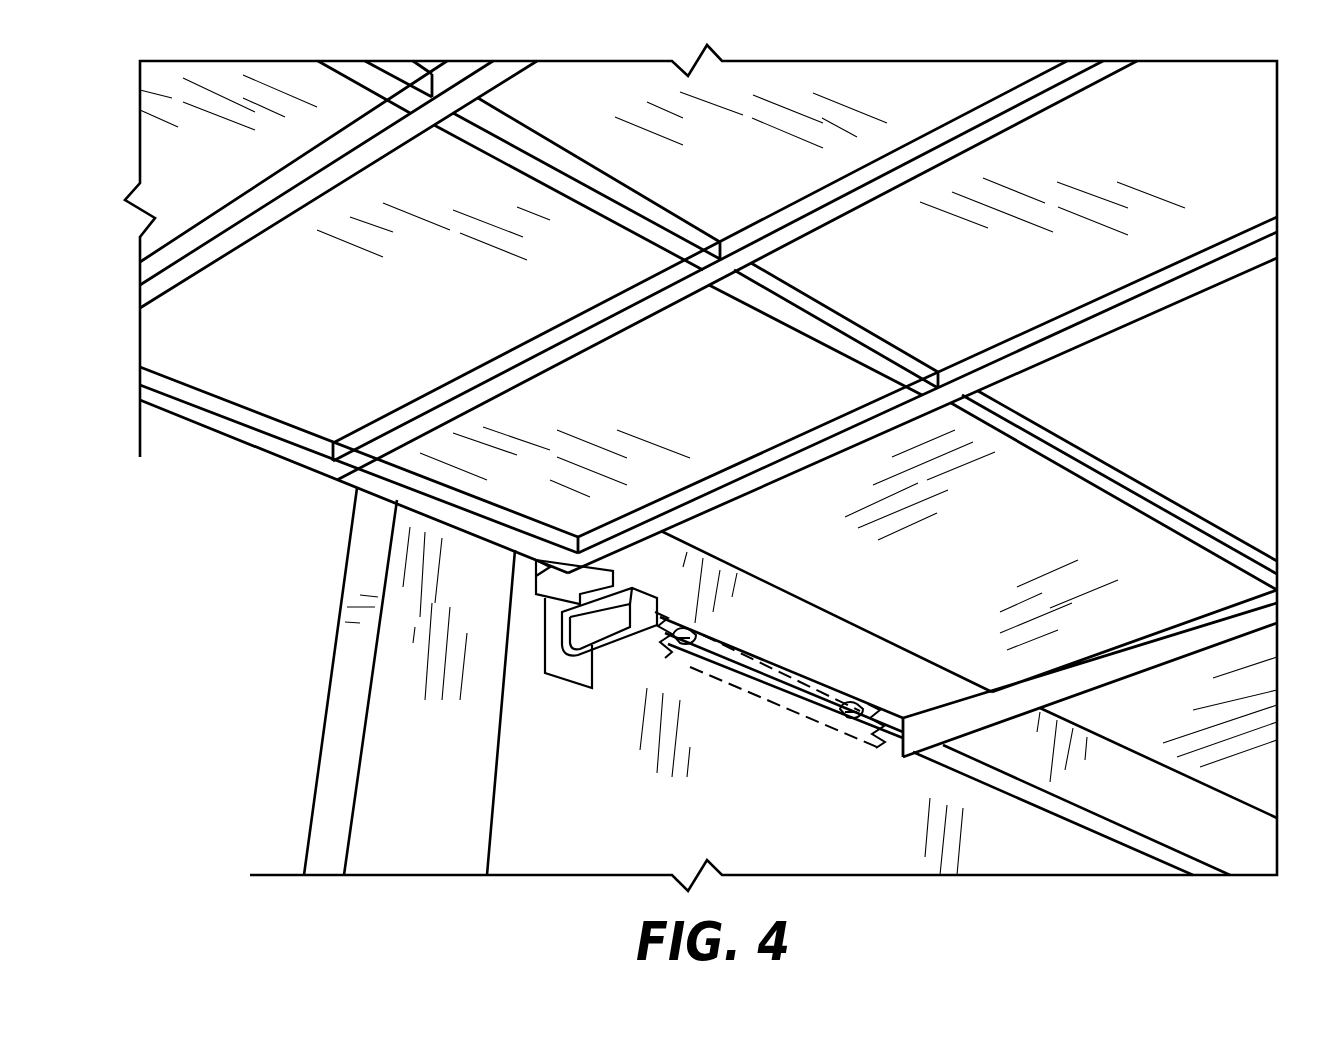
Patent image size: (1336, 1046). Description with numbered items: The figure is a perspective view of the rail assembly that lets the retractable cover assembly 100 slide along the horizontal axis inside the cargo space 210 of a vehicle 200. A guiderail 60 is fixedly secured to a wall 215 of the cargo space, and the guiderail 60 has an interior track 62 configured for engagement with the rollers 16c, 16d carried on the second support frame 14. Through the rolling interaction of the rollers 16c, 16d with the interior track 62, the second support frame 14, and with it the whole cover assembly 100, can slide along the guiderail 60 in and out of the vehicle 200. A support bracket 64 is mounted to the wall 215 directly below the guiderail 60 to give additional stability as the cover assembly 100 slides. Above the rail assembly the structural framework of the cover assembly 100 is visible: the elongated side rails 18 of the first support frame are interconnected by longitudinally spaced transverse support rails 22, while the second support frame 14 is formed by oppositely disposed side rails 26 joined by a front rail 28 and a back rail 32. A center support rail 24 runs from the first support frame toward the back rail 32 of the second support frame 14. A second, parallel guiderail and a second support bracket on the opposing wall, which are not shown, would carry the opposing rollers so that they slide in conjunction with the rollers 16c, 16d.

The retractable cover assembly 100 is at (125, 124).
The second support frame 14 is at (1182, 683).
The roller 16c is at (683, 628).
The roller 16d is at (847, 707).
The side rail 18 is at (213, 407).
The transverse support rail 22 is at (487, 84).
The center support rail 24 is at (1190, 522).
The side rail 26 is at (885, 742).
The front rail 28 is at (1262, 252).
The back rail 32 is at (1258, 620).
The guiderail 60 is at (1028, 788).
The interior track 62 is at (747, 665).
The support bracket 64 is at (618, 644).
The vehicle 200 is at (417, 621).
The cargo space 210 is at (532, 694).
The wall 215 is at (527, 633).